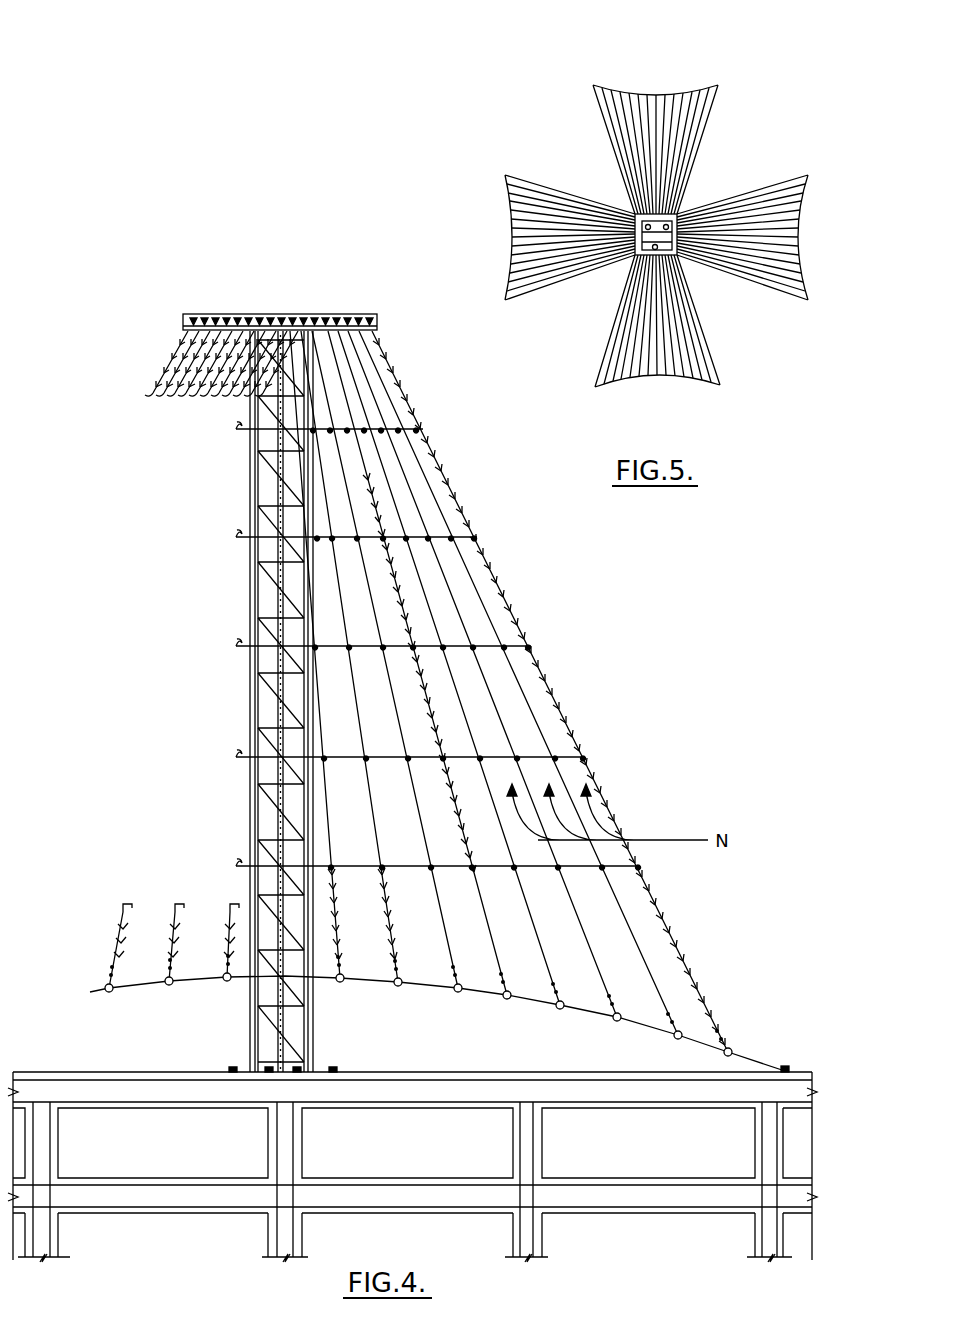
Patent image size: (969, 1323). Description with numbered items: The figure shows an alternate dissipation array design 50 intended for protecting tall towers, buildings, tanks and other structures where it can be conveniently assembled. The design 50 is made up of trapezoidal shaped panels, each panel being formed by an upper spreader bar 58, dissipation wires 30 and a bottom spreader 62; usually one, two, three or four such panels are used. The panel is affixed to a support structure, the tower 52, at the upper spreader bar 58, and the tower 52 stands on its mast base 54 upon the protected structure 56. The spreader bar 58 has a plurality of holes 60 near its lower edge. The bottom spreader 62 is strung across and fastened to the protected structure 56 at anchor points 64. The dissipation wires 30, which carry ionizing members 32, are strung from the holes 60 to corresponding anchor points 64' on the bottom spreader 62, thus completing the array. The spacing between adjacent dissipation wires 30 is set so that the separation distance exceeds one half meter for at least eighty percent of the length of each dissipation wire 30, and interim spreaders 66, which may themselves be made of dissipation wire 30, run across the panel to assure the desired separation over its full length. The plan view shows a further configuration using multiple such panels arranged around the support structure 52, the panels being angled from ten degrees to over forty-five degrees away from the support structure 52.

In FIG. 4, the dissipation wire 30 is at (540, 665).
In FIG. 5, the dissipation wire 30 is at (665, 143).
In FIG. 4, the ionizing member 32 is at (448, 452).
In FIG. 4, the alternate DAS design 50 is at (590, 705).
In FIG. 4, the tower 52 is at (250, 705).
In FIG. 4, the mast base 54 is at (336, 1070).
In FIG. 4, the protected structure 56 is at (170, 1093).
In FIG. 4, the upper spreader bar 58 is at (183, 320).
In FIG. 5, the upper spreader bar 58 is at (683, 213).
In FIG. 4, the holes 60 is at (270, 320).
In FIG. 4, the bottom spreader 62 is at (482, 993).
In FIG. 5, the bottom spreader 62 is at (653, 88).
In FIG. 4, the anchor points 64 is at (765, 1012).
In FIG. 4, the anchor points on bottom spreader 64' is at (418, 1005).
In FIG. 4, the interim spreaders 66 is at (242, 433).